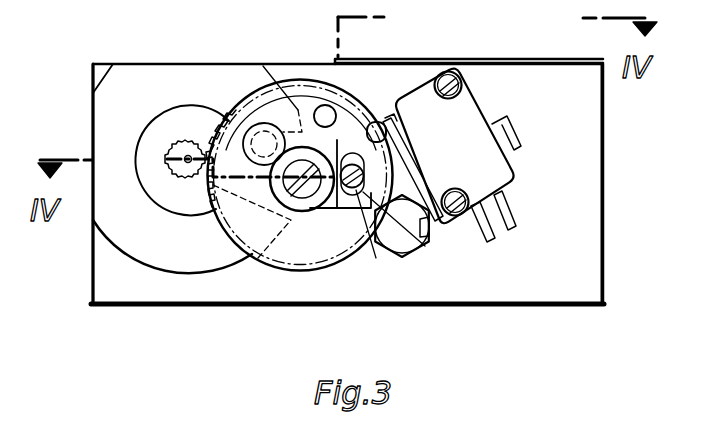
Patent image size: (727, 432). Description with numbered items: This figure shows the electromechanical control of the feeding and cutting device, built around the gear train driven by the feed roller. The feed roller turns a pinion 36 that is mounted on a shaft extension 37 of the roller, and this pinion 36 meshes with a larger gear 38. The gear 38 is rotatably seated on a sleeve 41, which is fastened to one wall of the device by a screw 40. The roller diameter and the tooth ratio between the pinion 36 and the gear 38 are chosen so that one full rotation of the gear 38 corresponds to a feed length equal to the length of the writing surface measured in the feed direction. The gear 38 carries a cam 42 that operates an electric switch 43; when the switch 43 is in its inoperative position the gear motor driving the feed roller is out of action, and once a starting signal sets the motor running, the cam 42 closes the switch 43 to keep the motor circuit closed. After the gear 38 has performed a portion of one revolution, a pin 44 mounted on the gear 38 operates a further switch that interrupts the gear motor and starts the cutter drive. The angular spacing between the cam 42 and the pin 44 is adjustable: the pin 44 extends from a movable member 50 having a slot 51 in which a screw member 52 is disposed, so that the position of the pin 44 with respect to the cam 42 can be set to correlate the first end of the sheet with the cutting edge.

The pinion 36 is at (170, 143).
The shaft extension 37 is at (191, 141).
The gear 38 is at (208, 200).
The screw 40 is at (298, 195).
The sleeve 41 is at (350, 192).
The cam 42 is at (255, 123).
The electric switch 43 is at (499, 172).
The pin 44 is at (325, 106).
The movable member 50 is at (378, 119).
The slot 51 is at (390, 258).
The screw member 52 is at (428, 238).